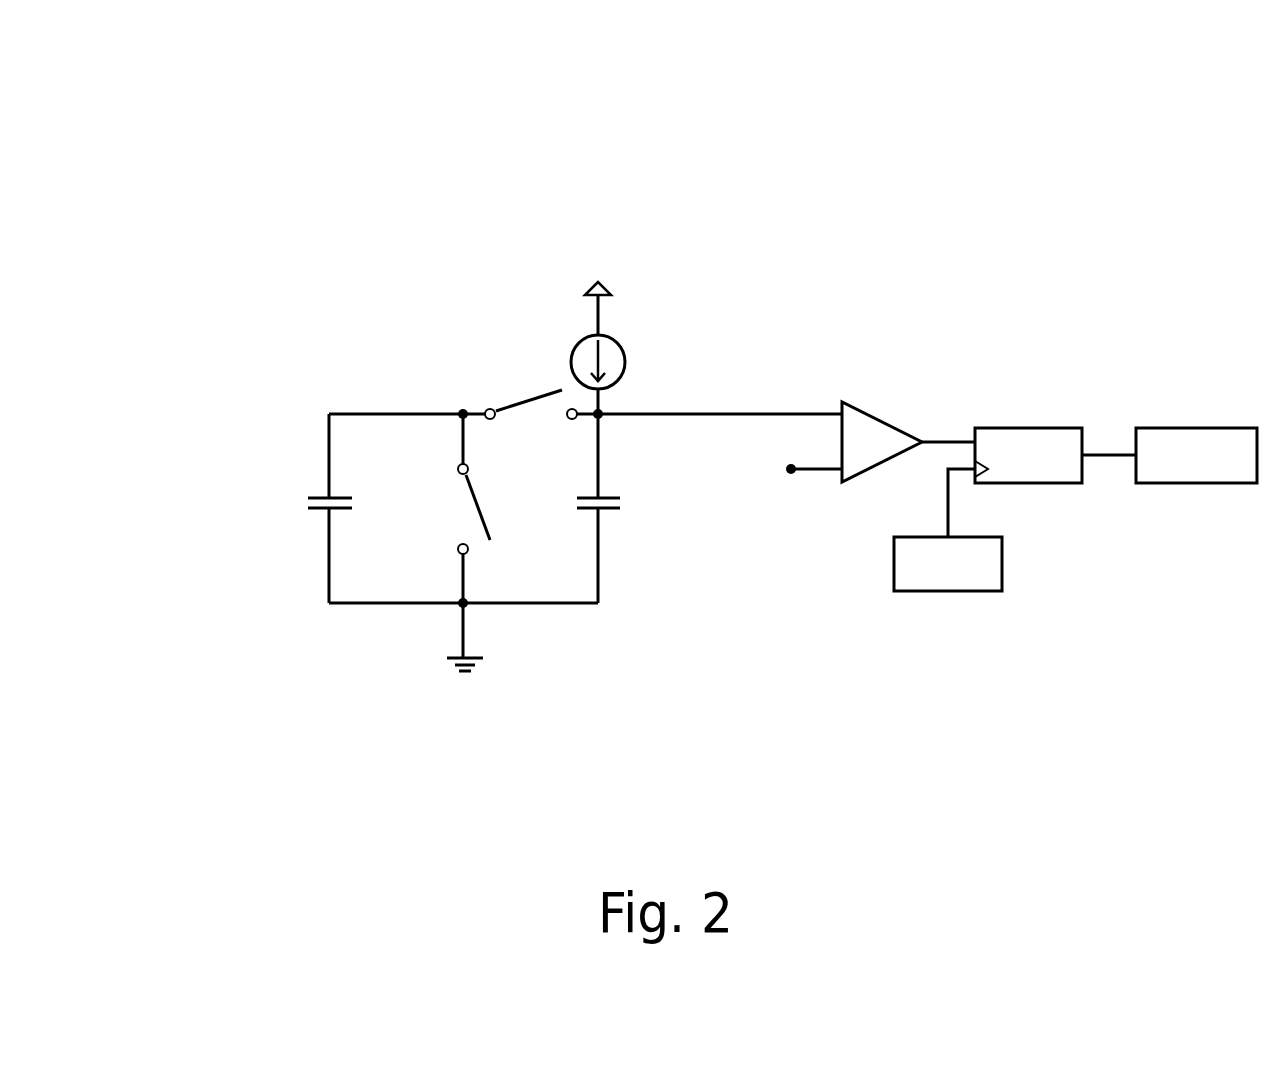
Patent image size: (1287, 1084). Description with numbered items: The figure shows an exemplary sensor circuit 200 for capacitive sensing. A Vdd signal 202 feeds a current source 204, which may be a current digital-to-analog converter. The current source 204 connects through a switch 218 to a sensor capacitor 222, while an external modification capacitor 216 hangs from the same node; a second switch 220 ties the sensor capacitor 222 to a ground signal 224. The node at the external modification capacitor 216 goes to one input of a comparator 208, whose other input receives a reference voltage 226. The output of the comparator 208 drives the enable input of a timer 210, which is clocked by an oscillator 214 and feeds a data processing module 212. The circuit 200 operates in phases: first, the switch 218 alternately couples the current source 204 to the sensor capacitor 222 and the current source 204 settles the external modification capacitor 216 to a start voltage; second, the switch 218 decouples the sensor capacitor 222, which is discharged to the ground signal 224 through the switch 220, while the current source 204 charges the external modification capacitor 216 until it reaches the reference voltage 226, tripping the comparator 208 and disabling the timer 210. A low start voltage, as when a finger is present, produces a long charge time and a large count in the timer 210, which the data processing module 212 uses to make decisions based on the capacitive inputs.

The sensor circuit 200 is at (182, 66).
The Vdd signal 202 is at (598, 282).
The current source 204 is at (634, 336).
The comparator 208 is at (867, 412).
The timer 210 is at (1023, 428).
The data processing module 212 is at (1207, 428).
The oscillator 214 is at (1003, 568).
The external modification capacitor 216 is at (634, 513).
The switch 218 is at (510, 407).
The switch 220 is at (477, 493).
The sensor capacitor 222 is at (262, 502).
The ground signal 224 is at (498, 676).
The reference voltage 226 is at (818, 470).